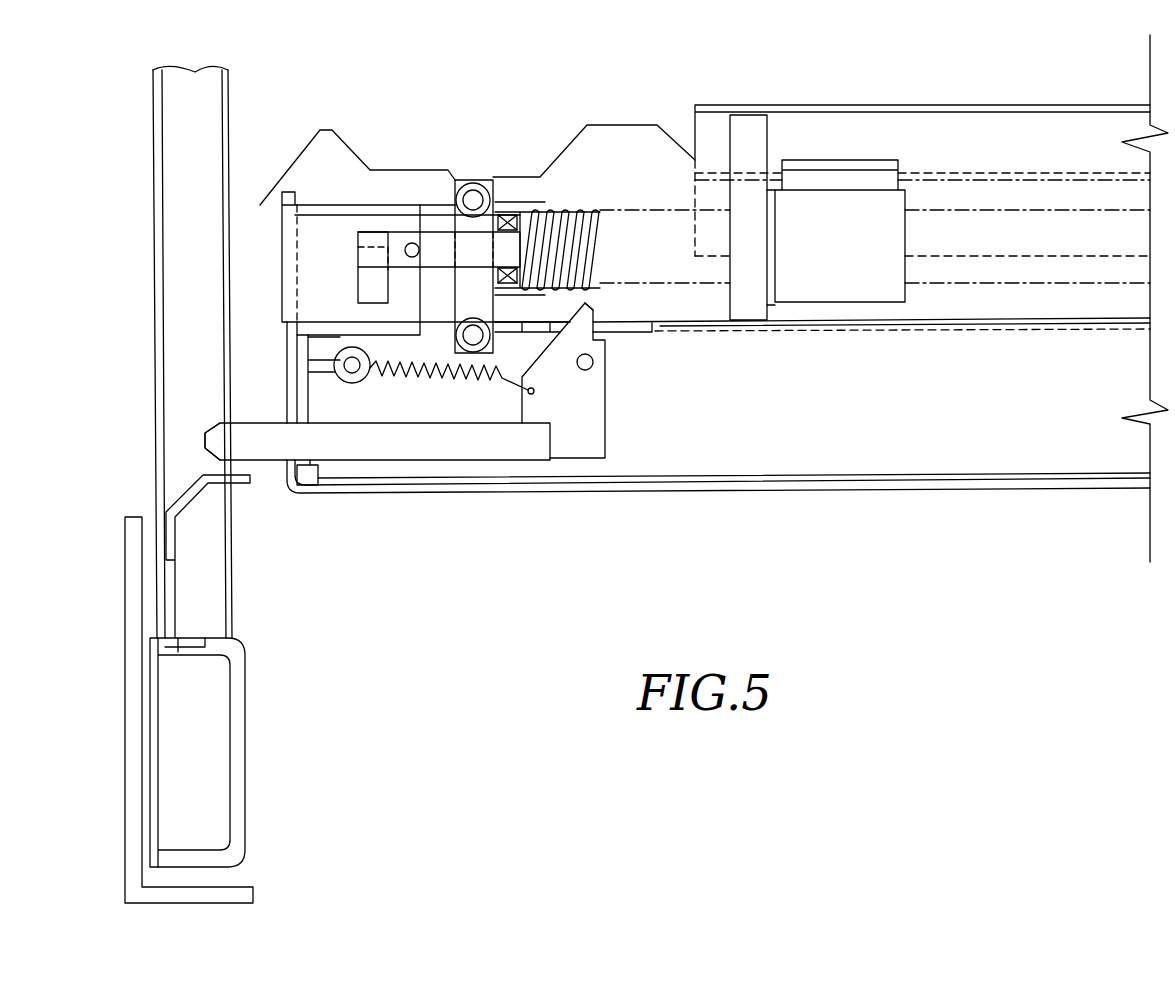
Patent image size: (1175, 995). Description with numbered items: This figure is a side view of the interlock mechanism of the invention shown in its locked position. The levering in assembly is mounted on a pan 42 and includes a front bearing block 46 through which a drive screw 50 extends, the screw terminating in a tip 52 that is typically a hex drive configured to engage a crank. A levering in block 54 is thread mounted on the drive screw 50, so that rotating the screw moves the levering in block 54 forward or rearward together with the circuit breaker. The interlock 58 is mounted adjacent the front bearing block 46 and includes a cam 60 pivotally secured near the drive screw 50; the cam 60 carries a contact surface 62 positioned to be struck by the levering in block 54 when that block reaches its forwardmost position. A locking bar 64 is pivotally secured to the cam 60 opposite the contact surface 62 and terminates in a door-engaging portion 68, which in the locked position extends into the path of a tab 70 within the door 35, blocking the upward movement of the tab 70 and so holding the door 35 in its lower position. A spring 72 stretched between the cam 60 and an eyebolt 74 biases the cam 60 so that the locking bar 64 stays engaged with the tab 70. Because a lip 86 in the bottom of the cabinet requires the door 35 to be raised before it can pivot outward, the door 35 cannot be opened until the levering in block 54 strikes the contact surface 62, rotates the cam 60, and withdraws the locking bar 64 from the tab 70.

The door 35 is at (212, 190).
The pan 42 is at (990, 322).
The front bearing block 46 is at (473, 195).
The drive screw 50 is at (650, 260).
The tip 52 is at (362, 290).
The levering in block 54 is at (832, 255).
The interlock 58 is at (535, 507).
The cam 60 is at (600, 428).
The contact surface 62 is at (598, 300).
The locking bar 64 is at (268, 455).
The door-engaging portion 68 is at (218, 432).
The tab 70 is at (195, 488).
The spring 72 is at (420, 375).
The eyebolt 74 is at (340, 355).
The lip 86 is at (125, 555).